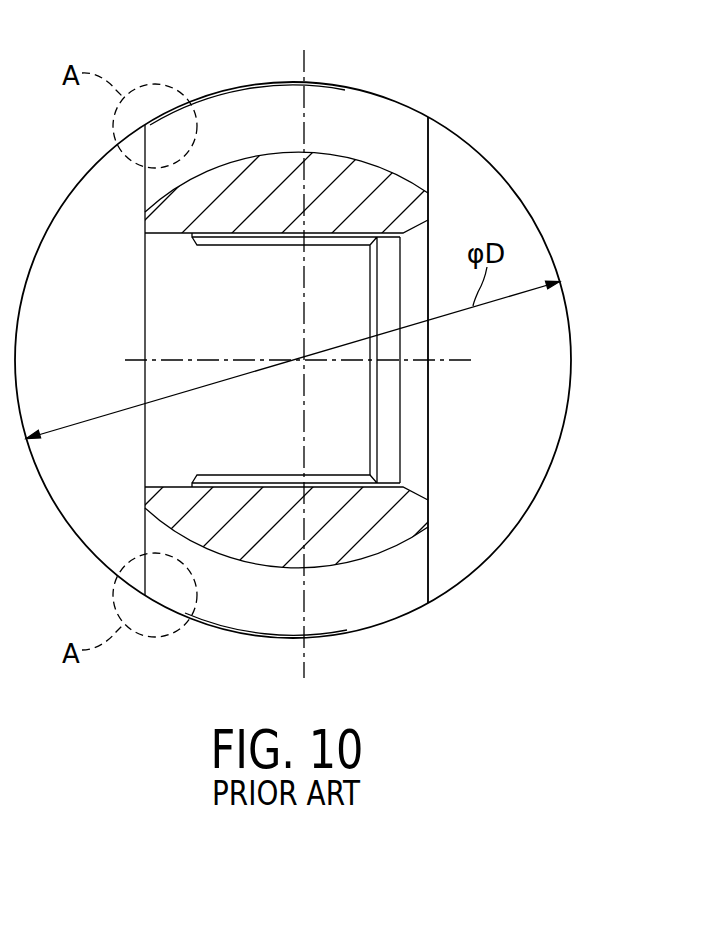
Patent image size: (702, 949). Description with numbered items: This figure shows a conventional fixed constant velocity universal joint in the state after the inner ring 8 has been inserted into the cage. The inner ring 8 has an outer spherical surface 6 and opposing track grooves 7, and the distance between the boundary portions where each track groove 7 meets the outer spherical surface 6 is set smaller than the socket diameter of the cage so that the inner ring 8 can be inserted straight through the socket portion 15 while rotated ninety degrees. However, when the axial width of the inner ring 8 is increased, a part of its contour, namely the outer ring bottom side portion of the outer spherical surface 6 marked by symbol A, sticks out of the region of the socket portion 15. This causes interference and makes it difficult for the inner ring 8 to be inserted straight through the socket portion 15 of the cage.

The outer spherical surface 6 is at (268, 634).
The track groove 7 is at (337, 155).
The inner ring 8 is at (446, 209).
The socket portion 15 is at (564, 436).